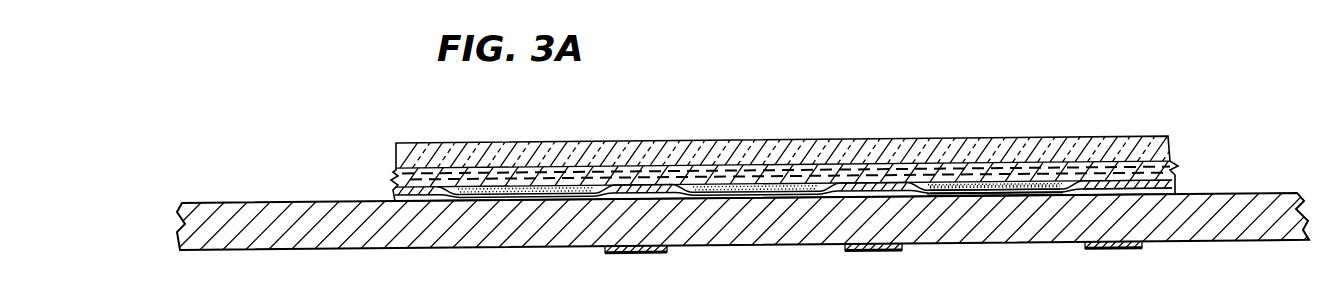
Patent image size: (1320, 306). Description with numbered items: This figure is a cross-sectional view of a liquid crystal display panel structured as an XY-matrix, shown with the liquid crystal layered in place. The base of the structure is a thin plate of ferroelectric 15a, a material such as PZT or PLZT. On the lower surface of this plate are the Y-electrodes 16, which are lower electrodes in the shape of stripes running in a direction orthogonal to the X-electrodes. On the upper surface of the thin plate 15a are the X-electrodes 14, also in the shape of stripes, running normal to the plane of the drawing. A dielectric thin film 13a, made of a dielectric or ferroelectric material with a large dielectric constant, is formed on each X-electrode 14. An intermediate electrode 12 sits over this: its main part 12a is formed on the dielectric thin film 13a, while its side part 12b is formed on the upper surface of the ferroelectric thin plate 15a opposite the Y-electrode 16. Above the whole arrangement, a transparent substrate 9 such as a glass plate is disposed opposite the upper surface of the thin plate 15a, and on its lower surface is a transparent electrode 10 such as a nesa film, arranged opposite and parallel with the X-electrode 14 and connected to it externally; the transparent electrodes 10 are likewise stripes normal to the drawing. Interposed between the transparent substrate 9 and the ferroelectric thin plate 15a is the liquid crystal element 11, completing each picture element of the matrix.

The transparent substrate 9 is at (1138, 150).
The transparent electrode 10 is at (1002, 166).
The liquid crystal element 11 is at (878, 180).
The intermediate electrode 12 is at (1078, 180).
The main part of intermediate electrode 12a is at (935, 200).
The side part of intermediate electrode 12b is at (1154, 187).
The dielectric thin film 13a is at (1036, 198).
The X-electrode 14 is at (982, 200).
The thin plate of ferroelectric 15a is at (1192, 235).
The Y-electrode 16 is at (1098, 248).